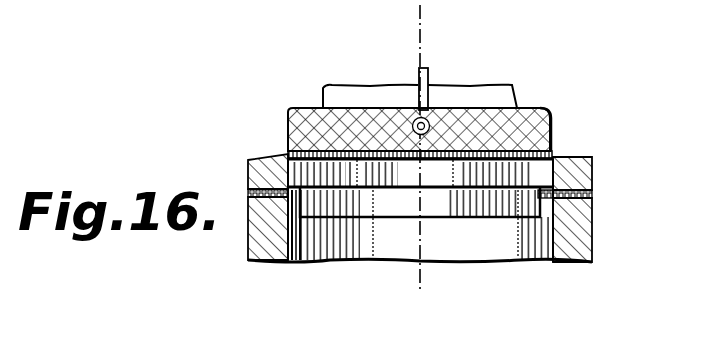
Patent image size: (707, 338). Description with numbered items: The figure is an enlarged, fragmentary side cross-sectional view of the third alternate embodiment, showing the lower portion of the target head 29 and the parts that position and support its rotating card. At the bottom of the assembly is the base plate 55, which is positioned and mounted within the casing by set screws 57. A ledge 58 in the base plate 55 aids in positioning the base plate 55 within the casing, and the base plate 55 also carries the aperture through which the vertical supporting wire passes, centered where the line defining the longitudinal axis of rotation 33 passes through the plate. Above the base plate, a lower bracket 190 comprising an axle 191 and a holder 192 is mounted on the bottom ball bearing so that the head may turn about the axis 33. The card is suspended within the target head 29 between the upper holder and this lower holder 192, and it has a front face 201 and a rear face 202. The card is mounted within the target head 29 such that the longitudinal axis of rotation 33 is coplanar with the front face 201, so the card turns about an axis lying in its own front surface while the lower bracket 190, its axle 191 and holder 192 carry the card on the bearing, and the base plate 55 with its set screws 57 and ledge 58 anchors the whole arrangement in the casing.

The longitudinal axis of rotation 33 is at (420, 45).
The front face 201 is at (416, 74).
The rear face 202 is at (428, 93).
The lower bracket 190 is at (533, 108).
The holder 192 is at (553, 125).
The axle 191 is at (360, 168).
The ledge 58 is at (545, 226).
The base plate 55 is at (250, 170).
The set screws 57 is at (580, 195).
The target head 29 is at (592, 250).